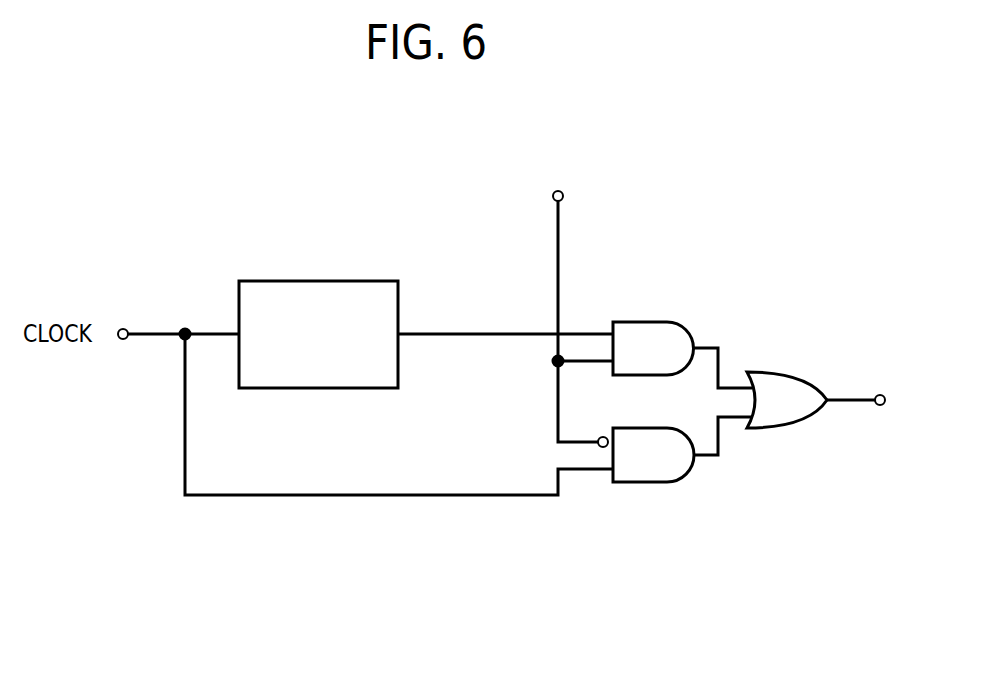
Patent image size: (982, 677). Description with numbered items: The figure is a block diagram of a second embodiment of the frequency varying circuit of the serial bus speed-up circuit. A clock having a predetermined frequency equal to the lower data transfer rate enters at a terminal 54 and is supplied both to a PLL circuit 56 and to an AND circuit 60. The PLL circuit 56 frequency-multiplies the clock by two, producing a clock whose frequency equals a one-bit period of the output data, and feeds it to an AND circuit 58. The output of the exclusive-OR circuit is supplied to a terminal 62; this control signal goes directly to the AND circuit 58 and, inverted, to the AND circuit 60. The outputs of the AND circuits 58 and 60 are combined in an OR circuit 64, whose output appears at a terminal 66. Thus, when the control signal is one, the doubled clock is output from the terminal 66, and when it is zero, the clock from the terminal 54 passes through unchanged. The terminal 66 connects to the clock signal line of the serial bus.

The terminal 54 is at (122, 329).
The PLL circuit 56 is at (341, 281).
The AND circuit 58 is at (695, 320).
The AND circuit 60 is at (688, 471).
The terminal 62 is at (564, 197).
The OR circuit 64 is at (800, 372).
The terminal 66 is at (882, 395).